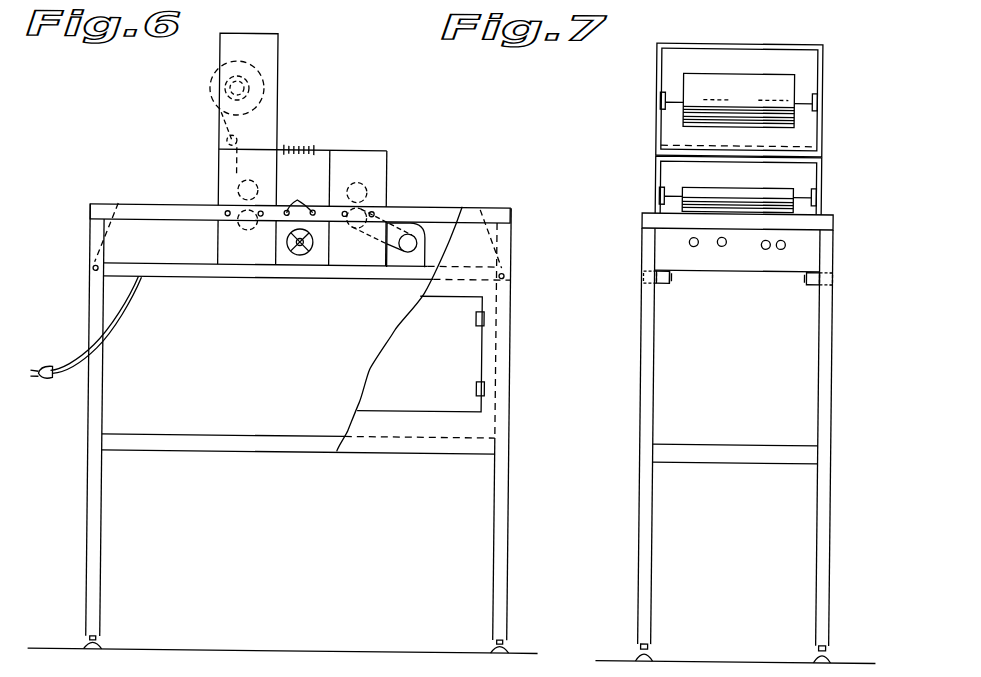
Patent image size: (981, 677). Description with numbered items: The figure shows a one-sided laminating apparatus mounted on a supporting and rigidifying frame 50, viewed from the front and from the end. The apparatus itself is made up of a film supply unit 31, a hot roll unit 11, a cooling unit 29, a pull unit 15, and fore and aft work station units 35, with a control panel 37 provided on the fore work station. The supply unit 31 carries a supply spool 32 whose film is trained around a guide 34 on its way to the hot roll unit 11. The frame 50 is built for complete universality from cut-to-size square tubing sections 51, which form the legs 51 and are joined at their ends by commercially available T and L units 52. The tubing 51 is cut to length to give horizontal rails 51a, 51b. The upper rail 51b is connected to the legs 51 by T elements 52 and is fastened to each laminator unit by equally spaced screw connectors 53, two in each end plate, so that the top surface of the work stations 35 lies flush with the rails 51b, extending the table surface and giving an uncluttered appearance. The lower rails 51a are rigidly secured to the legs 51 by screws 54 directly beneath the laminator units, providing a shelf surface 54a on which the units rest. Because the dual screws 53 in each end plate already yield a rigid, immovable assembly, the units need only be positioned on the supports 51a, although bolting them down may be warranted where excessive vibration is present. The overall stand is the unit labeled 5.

In FIG. 7, the stand 5 is at (732, 428).
In FIG. 6, the hot roll unit 11 is at (248, 246).
In FIG. 7, the hot roll unit 11 is at (652, 171).
In FIG. 6, the pull unit 15 is at (359, 252).
In FIG. 6, the cooling unit 29 is at (304, 266).
In FIG. 6, the film supply unit 31 is at (278, 95).
In FIG. 7, the film supply unit 31 is at (652, 125).
In FIG. 7, the supply spool 32 is at (779, 88).
In FIG. 7, the guide 34 is at (797, 145).
In FIG. 6, the fore and aft work station units 35 is at (432, 234).
In FIG. 7, the control panel 37 is at (718, 263).
In FIG. 6, the frame 50 is at (271, 456).
In FIG. 6, the square tubing sections 51 is at (165, 449).
In FIG. 7, the square tubing sections 51 is at (647, 579).
In FIG. 6, the horizontal rails 51a is at (169, 272).
In FIG. 7, the horizontal rails 51a is at (660, 276).
In FIG. 6, the horizontal rails 51b is at (165, 207).
In FIG. 6, the T and L units 52 is at (90, 212).
In FIG. 7, the T and L units 52 is at (644, 221).
In FIG. 6, the screw connectors 53 is at (295, 200).
In FIG. 6, the screws 54 is at (91, 272).
In FIG. 7, the screws 54 is at (653, 276).
In FIG. 7, the shelf surface 54a is at (660, 273).